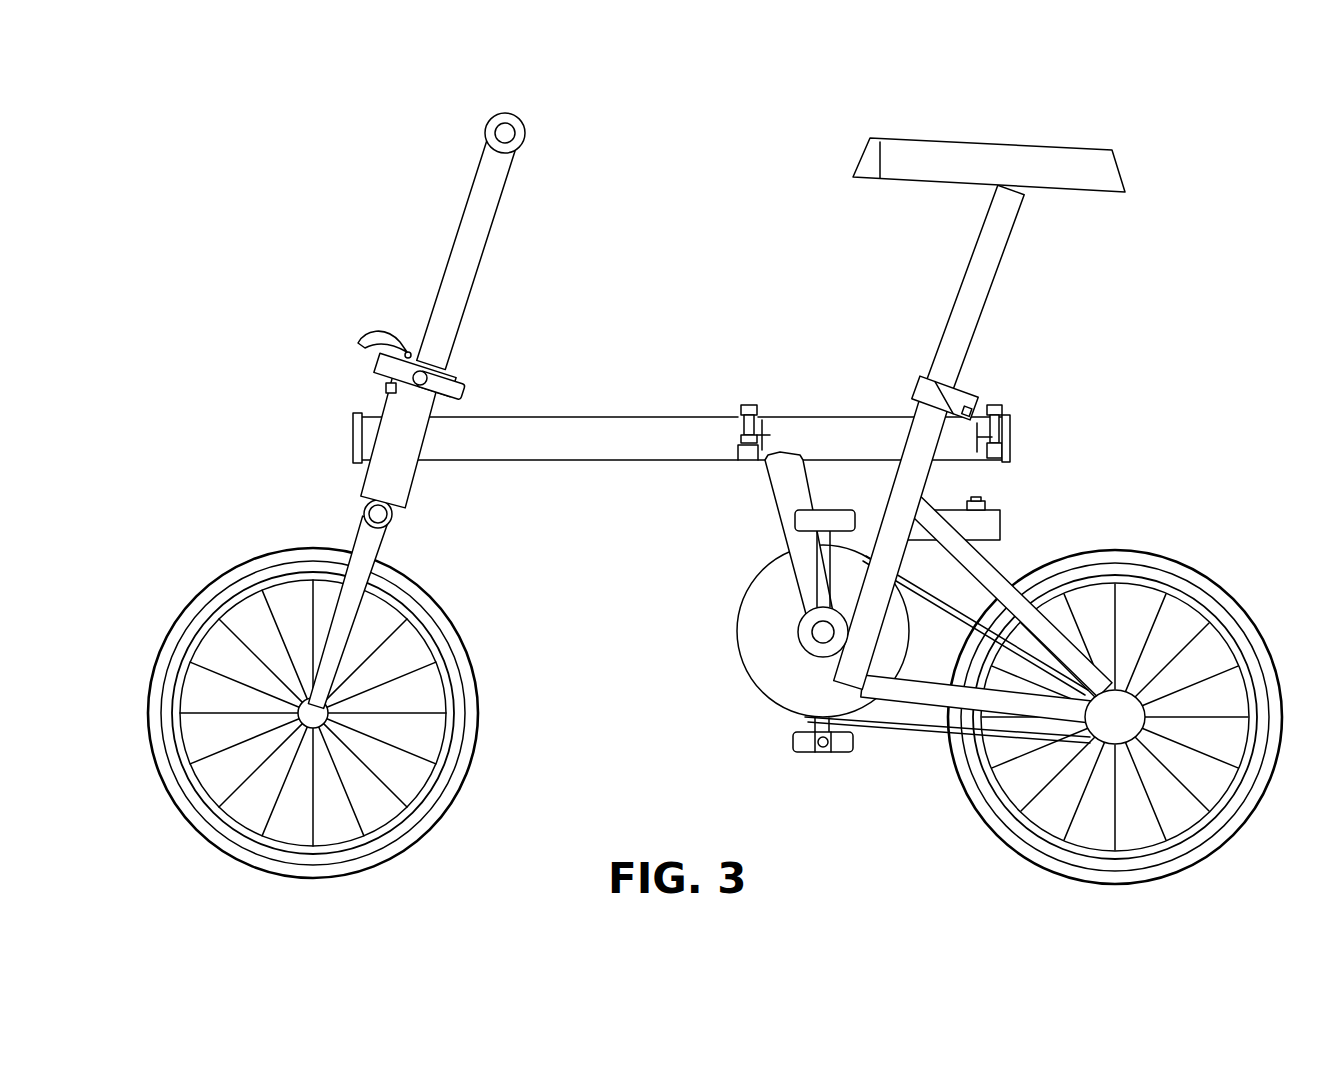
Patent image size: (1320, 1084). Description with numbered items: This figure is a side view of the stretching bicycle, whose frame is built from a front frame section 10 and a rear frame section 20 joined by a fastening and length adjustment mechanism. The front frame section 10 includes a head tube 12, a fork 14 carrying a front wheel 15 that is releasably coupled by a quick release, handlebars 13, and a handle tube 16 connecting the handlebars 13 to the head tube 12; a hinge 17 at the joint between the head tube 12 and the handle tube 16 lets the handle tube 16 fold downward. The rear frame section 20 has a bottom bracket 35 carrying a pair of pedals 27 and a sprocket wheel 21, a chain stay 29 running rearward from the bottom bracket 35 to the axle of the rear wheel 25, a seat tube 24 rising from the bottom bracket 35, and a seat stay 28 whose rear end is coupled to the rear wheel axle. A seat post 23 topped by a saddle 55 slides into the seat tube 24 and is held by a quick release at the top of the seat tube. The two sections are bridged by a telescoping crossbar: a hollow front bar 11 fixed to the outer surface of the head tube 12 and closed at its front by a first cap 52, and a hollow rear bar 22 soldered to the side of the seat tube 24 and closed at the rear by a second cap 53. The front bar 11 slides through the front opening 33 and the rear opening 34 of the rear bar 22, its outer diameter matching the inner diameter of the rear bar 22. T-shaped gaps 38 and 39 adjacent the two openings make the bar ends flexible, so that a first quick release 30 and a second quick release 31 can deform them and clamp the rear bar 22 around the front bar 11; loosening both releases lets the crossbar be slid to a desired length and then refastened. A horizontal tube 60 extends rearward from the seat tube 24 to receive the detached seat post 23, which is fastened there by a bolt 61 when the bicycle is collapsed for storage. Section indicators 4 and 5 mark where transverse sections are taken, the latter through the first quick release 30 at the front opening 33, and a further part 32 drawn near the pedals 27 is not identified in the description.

The section line 4- 4 is at (412, 400).
The section line 5- 5 is at (772, 373).
The front frame section 10 is at (380, 262).
The front bar 11 is at (561, 415).
The head tube 12 is at (418, 466).
The handlebars 13 is at (486, 128).
The fork 14 is at (368, 538).
The front wheel 15 is at (210, 590).
The handle tube 16 is at (475, 245).
The hinge 17 is at (380, 362).
The rear frame section 20 is at (1145, 352).
The sprocket wheel 21 is at (876, 725).
The rear bar 22 is at (860, 428).
The seat post 23 is at (993, 260).
The seat tube 24 is at (840, 678).
The rear wheel 25 is at (1012, 836).
The pedals 27 is at (795, 748).
The seat stay 28 is at (990, 577).
The chain stay 29 is at (925, 697).
The first quick release 30 is at (725, 400).
The second quick release 31 is at (1018, 398).
The crank arm and pedal 32 is at (780, 520).
The front opening 33 is at (738, 452).
The rear opening 34 is at (940, 398).
The bottom bracket 35 is at (800, 637).
The T-shaped gap 38 is at (765, 437).
The T-shaped gap 39 is at (985, 410).
The first cap 52 is at (353, 437).
The second cap 53 is at (1012, 430).
The saddle 55 is at (1047, 163).
The horizontal tube 60 is at (1000, 520).
The bolt 61 is at (987, 503).